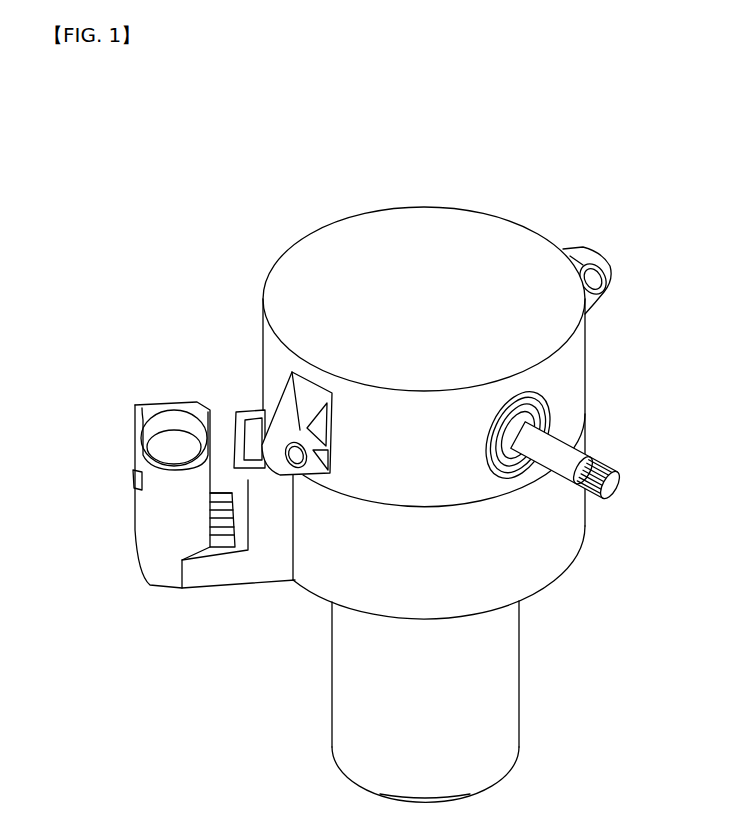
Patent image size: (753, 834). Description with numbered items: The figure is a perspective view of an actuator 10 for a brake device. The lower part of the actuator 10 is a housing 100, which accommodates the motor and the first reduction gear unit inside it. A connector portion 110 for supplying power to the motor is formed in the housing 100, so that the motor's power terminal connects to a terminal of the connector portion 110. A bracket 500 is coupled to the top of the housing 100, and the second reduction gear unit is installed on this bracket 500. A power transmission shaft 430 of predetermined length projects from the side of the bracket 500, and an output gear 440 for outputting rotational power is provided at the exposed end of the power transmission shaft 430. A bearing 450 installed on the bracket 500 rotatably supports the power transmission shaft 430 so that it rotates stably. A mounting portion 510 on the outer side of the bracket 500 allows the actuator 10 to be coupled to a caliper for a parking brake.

The actuator for a brake device 10 is at (556, 153).
The housing 100 is at (578, 586).
The connector portion 110 is at (163, 584).
The power transmission shaft 430 is at (586, 454).
The output gear 440 is at (618, 486).
The bearing 450 is at (551, 412).
The bracket 500 is at (556, 230).
The mounting portion 510 is at (277, 440).